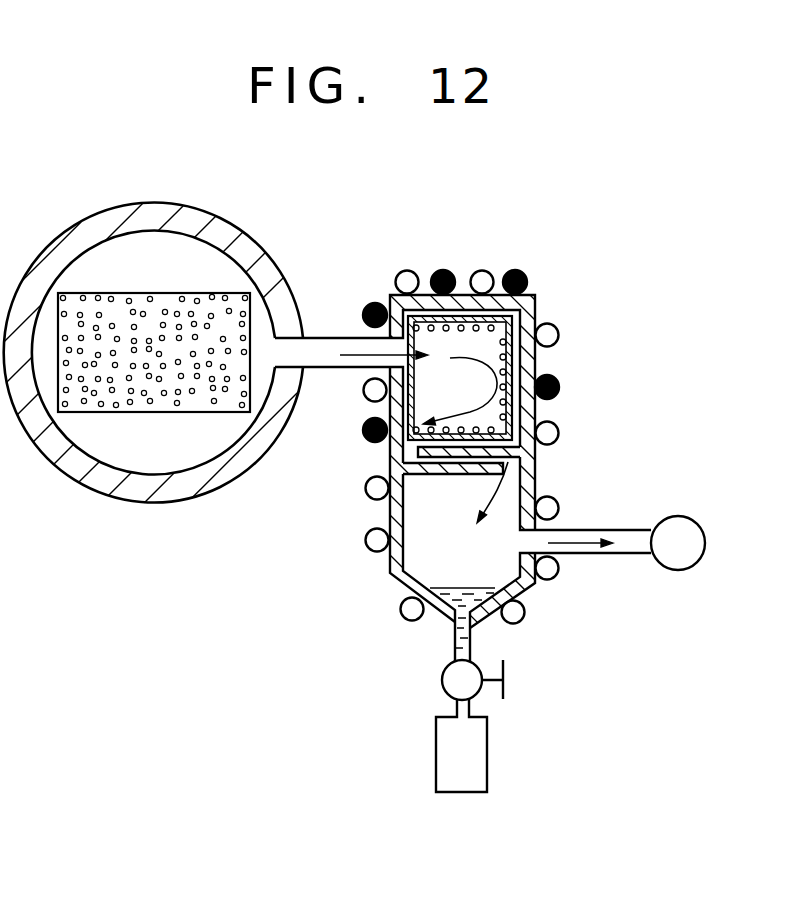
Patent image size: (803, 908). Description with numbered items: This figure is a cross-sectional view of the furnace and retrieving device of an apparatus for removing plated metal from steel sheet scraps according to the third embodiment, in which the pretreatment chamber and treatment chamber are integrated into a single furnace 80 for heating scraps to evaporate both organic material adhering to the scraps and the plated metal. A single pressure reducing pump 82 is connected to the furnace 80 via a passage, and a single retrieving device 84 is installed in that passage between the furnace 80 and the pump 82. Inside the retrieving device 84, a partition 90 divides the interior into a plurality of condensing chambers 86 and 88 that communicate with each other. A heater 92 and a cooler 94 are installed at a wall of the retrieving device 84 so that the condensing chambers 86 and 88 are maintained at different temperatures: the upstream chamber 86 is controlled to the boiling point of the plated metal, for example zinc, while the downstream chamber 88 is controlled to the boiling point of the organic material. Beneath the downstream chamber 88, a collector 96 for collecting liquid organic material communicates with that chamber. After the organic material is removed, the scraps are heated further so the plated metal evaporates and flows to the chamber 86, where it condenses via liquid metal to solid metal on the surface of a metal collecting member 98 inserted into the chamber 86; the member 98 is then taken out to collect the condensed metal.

The furnace 80 is at (113, 222).
The pressure reducing pump 82 is at (655, 515).
The retrieving device 84 is at (543, 297).
The condensing chamber 86 is at (498, 410).
The condensing chamber 88 is at (488, 558).
The partition 90 is at (428, 470).
The heater 92 is at (563, 326).
The cooler 94 is at (513, 270).
The collector 96 is at (487, 758).
The metal collecting member 98 is at (438, 324).